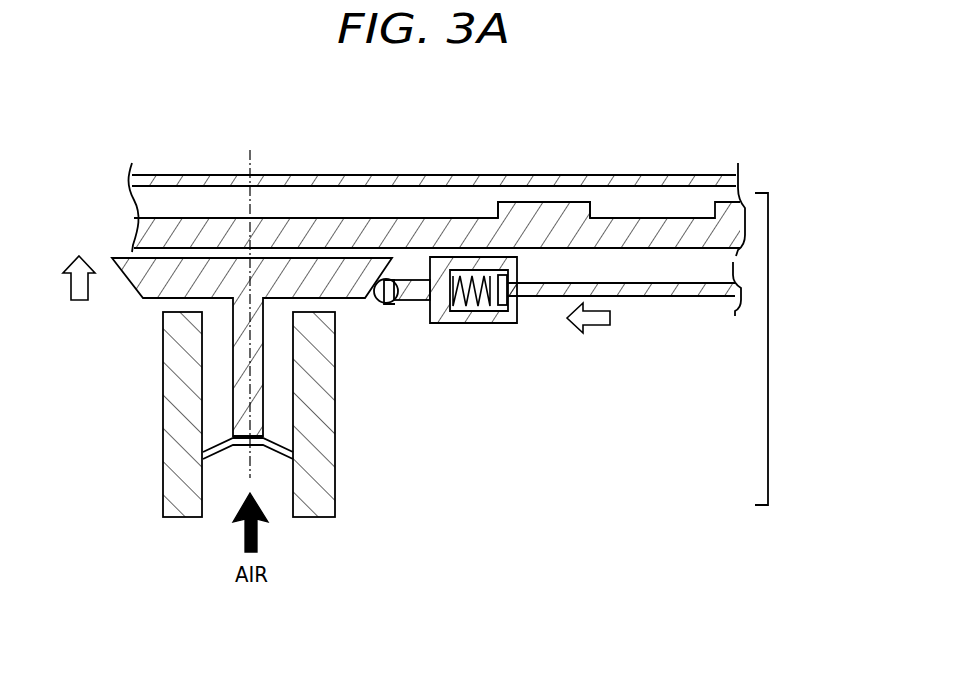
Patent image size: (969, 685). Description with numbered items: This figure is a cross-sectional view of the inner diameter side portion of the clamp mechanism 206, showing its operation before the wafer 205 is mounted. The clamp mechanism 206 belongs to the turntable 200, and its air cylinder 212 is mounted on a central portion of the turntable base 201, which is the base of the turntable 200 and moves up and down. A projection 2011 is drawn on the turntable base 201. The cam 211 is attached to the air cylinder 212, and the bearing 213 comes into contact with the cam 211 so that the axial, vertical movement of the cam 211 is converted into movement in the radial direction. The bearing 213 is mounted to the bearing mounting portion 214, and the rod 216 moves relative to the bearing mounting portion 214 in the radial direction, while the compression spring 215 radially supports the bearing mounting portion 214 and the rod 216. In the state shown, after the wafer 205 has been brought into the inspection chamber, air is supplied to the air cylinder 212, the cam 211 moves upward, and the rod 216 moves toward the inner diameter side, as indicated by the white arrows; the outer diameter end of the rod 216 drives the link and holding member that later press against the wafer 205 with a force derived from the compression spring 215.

The turntable 200 is at (768, 262).
The wafer 205 is at (312, 180).
The turntable base 201 is at (397, 230).
The projection of base plate 2011 is at (543, 213).
The cam 211 is at (148, 292).
The air cylinder 212 is at (178, 482).
The bearing 213 is at (381, 306).
The bearing mounting portion 214 is at (447, 324).
The compression spring 215 is at (508, 324).
The rod 216 is at (628, 300).
The clamp mechanism 206 is at (592, 425).